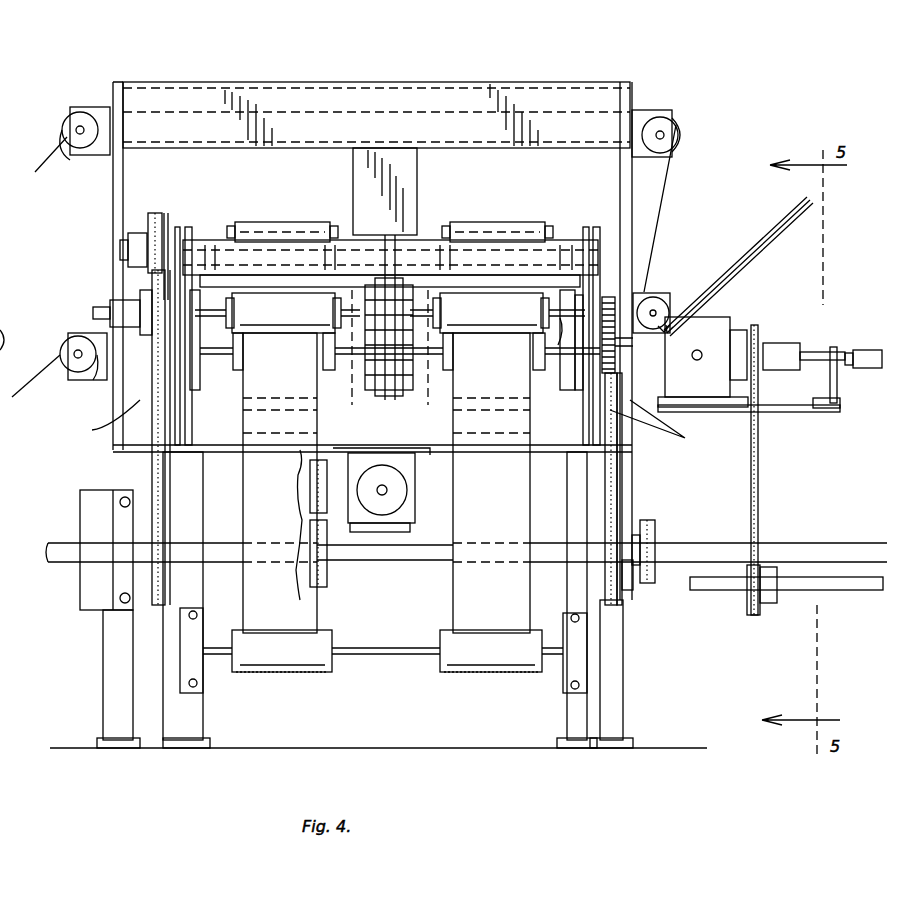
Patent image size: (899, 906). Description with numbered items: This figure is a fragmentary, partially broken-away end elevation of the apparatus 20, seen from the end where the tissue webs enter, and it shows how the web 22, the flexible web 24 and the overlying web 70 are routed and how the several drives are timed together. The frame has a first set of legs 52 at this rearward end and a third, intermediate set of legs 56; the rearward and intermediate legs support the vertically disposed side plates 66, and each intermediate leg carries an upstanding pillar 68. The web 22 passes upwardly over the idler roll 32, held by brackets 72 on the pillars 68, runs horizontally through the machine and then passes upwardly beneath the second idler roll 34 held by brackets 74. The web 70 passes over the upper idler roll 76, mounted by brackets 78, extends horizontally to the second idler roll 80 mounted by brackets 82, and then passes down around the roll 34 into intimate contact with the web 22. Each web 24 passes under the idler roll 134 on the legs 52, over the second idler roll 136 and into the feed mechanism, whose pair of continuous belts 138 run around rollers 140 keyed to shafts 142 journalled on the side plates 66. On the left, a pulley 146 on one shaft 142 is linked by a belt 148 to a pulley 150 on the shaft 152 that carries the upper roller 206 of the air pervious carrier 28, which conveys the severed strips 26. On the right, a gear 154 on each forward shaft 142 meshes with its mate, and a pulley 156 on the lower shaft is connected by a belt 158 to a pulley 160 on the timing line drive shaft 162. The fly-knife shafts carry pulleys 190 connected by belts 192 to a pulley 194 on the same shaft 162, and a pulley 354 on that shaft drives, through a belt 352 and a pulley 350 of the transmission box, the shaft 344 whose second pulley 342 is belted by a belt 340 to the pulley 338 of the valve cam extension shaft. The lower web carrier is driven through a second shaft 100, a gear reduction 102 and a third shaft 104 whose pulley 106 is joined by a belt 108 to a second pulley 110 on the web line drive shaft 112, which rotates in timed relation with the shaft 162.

The apparatus 20 is at (718, 150).
The web 22 is at (783, 235).
The web of light flexible sheet material 24 is at (300, 600).
The strips 26 is at (808, 198).
The carrier screen 28 is at (290, 222).
The idler roll 32 is at (70, 372).
The second idler roll 34 is at (672, 312).
The first set of legs 52 is at (203, 722).
The third set of legs 56 is at (103, 718).
The side plates 66 is at (180, 227).
The pillar 68 is at (113, 196).
The web 70 is at (35, 172).
The brackets 72 is at (78, 333).
The brackets 74 is at (655, 296).
The upper idler roll 76 is at (64, 150).
The brackets 78 is at (84, 108).
The second idler roll 80 is at (672, 125).
The brackets 82 is at (648, 110).
The second shaft 100 is at (10, 332).
The gear reduction 102 is at (705, 322).
The third shaft 104 is at (818, 352).
The pulley 106 is at (768, 343).
The belt 108 is at (758, 428).
The second pulley 110 is at (762, 612).
The web line drive shaft 112 is at (860, 590).
The idler roll 134 is at (300, 632).
The second idler roll 136 is at (243, 350).
The continuous belts 138 is at (387, 309).
The rollers 140 is at (387, 312).
The shafts 142 is at (556, 342).
The pulley 146 is at (112, 327).
The belt 148 is at (166, 213).
The pulley 150 is at (148, 213).
The shaft 152 is at (122, 248).
The gear 154 is at (608, 297).
The pulley 156 is at (668, 364).
The belt 158 is at (622, 470).
The pulley 160 is at (655, 530).
The timing line drive shaft 162 is at (436, 552).
The pulley 190 is at (98, 432).
The belt 192 is at (152, 466).
The pulley 194 is at (80, 515).
The upper roller 206 is at (232, 222).
The pulley 338 is at (406, 240).
The belt 340 is at (415, 462).
The second pulley 342 is at (400, 480).
The shaft 344 is at (387, 490).
The pulley 350 is at (298, 462).
The belt 352 is at (310, 492).
The pulley 354 is at (330, 572).